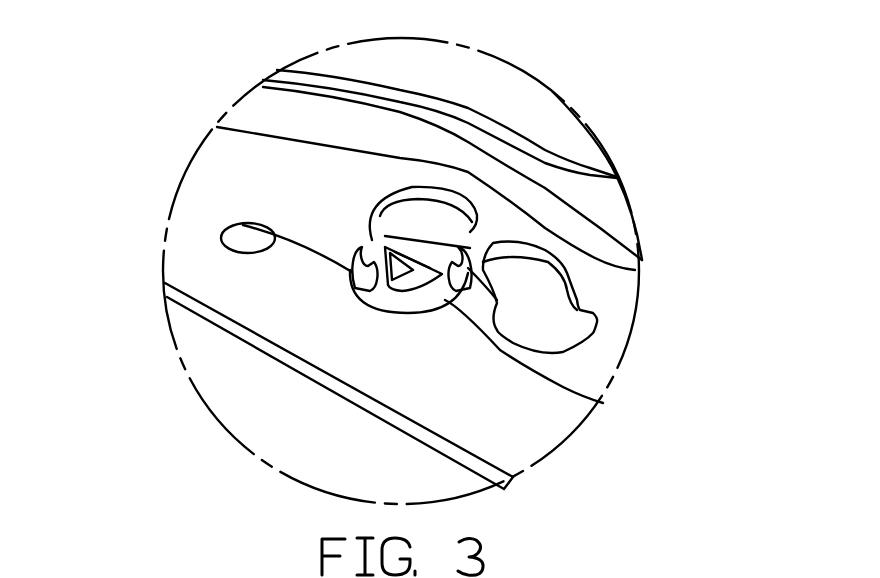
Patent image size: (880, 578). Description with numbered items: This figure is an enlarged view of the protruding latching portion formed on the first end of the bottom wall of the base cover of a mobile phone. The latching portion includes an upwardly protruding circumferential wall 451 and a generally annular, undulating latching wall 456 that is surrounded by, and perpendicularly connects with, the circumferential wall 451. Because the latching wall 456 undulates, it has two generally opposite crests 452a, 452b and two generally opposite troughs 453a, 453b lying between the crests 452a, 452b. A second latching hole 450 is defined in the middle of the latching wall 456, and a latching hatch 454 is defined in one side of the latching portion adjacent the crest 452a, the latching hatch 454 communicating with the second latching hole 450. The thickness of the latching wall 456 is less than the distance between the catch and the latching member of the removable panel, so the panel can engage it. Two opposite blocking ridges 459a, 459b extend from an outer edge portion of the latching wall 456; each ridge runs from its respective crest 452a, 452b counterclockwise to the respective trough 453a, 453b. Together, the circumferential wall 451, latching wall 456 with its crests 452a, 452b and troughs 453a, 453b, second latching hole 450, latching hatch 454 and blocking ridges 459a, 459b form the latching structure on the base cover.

The second latching hole 450 is at (407, 270).
The circumferential wall 451 is at (603, 403).
The crest 452a is at (355, 252).
The crest 452b is at (432, 283).
The trough 453a is at (388, 294).
The trough 453b is at (425, 245).
The latching hatch 454 is at (380, 245).
The latching wall 456 is at (408, 250).
The blocking ridge 459a is at (243, 225).
The blocking ridge 459b is at (462, 248).